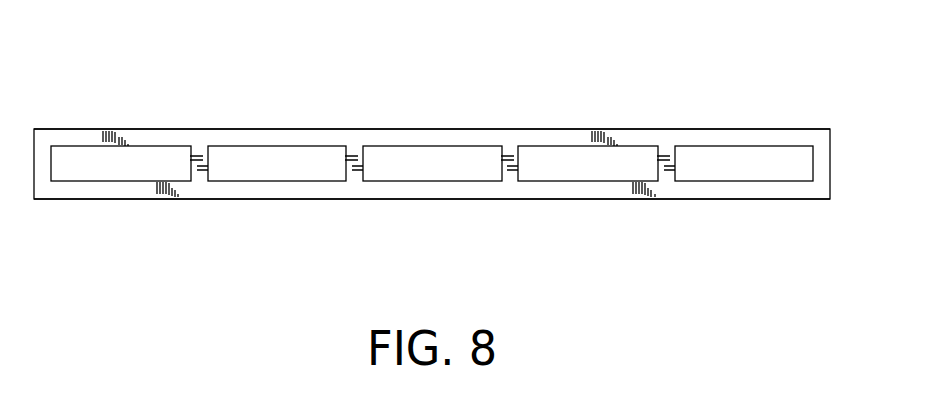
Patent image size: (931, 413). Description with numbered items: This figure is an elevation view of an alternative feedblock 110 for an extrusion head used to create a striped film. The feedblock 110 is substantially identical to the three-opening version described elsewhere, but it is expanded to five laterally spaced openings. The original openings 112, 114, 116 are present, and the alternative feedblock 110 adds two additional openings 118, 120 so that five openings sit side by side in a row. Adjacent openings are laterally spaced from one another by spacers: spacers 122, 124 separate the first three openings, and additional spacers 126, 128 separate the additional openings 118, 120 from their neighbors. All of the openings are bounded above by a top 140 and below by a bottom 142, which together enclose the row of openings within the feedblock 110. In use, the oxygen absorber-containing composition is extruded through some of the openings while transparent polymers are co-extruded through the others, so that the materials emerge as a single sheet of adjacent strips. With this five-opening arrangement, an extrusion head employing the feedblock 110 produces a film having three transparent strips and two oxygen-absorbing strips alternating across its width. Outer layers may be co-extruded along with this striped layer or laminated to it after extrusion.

The feedblock 110 is at (760, 107).
The opening 112 is at (120, 170).
The opening 114 is at (275, 170).
The opening 116 is at (467, 170).
The additional opening 118 is at (597, 170).
The additional opening 120 is at (725, 170).
The spacer 122 is at (192, 158).
The spacer 124 is at (348, 158).
The additional spacer 126 is at (505, 158).
The additional spacer 128 is at (660, 158).
The top 140 is at (235, 138).
The bottom 142 is at (369, 191).